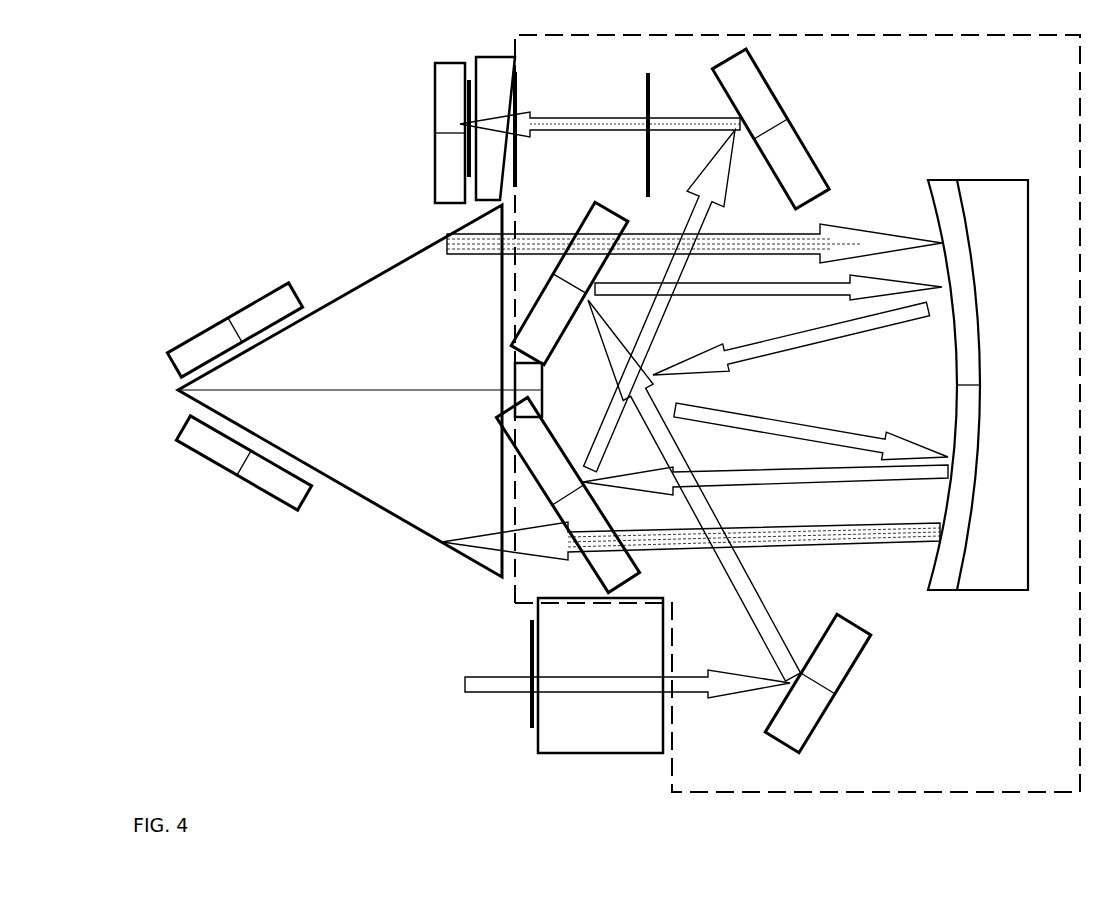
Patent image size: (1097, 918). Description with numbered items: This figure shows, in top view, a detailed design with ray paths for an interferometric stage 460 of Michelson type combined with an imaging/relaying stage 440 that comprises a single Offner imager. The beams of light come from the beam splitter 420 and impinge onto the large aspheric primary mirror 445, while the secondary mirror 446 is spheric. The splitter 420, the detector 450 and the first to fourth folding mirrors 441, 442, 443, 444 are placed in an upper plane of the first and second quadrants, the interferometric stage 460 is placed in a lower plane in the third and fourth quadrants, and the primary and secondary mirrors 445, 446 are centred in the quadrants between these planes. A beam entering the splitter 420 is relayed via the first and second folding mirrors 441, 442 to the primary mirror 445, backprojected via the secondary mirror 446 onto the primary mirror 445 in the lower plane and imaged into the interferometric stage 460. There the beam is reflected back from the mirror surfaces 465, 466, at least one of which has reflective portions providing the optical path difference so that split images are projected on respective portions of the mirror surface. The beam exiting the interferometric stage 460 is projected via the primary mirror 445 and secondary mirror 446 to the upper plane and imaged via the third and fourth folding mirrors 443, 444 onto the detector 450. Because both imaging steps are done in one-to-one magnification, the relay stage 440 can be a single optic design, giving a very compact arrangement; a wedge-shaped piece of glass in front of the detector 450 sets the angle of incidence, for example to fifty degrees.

The beam splitter 420 is at (585, 752).
The imaging/relaying stage 440 is at (1043, 76).
The first folding mirror 441 is at (807, 722).
The second folding mirror 442 is at (598, 214).
The third folding mirror 443 is at (612, 575).
The fourth folding mirror 444 is at (753, 89).
The primary mirror 445 is at (1013, 583).
The secondary mirror 446 is at (523, 368).
The detector 450 is at (426, 133).
The interferometric stage 460 is at (356, 500).
The mirror surface 465 is at (211, 342).
The mirror surface 466 is at (211, 445).